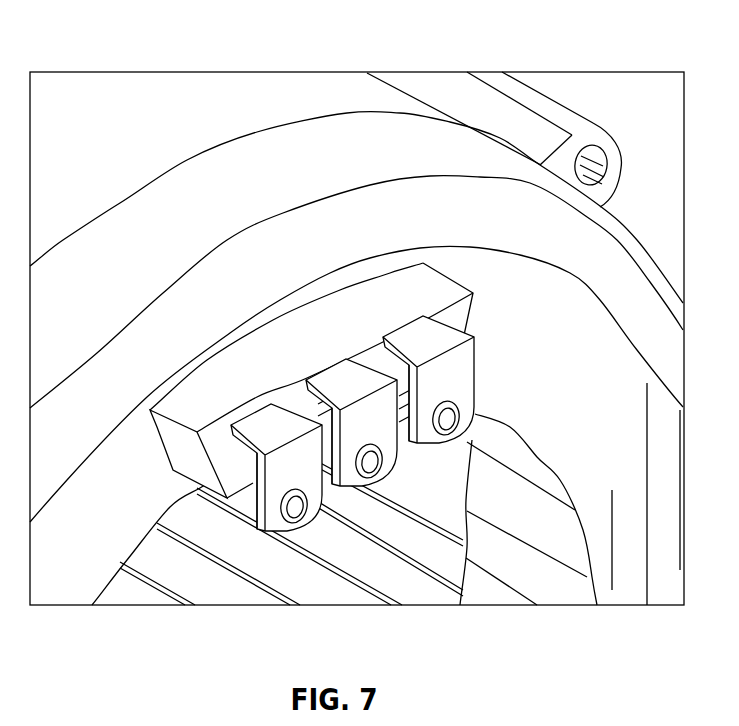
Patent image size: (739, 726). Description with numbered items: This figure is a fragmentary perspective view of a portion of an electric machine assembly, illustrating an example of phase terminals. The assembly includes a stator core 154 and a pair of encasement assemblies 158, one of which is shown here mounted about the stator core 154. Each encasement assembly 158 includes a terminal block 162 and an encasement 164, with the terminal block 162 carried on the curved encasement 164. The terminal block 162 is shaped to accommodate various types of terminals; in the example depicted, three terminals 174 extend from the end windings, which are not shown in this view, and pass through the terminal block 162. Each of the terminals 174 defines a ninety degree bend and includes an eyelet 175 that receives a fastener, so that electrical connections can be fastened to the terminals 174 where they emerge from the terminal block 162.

The stator core 154 is at (70, 88).
The encasement assembly 158 is at (348, 111).
The terminal block 162 is at (384, 300).
The encasement 164 is at (257, 132).
The terminal 174 is at (263, 528).
The eyelet 175 is at (295, 525).